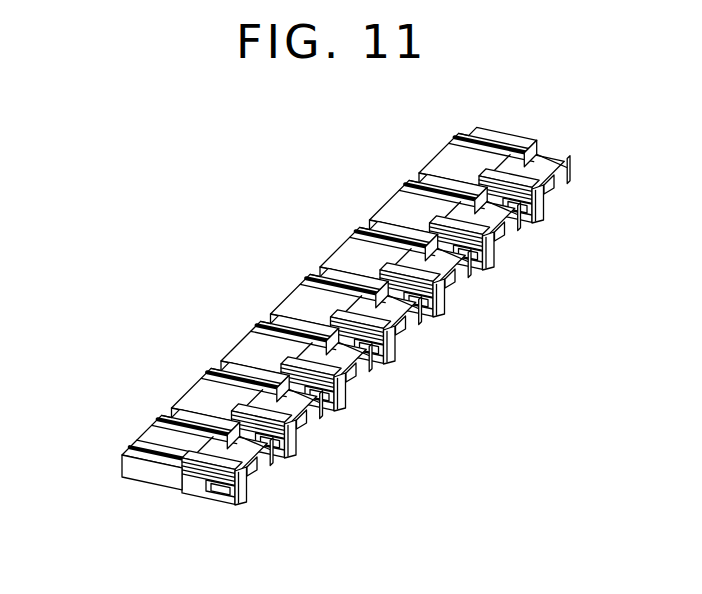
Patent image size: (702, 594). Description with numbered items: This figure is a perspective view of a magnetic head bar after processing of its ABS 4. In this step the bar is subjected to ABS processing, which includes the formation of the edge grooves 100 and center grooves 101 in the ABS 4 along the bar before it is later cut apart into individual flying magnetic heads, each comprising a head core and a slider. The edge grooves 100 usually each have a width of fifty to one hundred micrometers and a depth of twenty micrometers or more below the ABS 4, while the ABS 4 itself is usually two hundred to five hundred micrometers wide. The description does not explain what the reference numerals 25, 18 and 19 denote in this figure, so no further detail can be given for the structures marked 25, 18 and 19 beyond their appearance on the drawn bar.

The connector housing 25 is at (310, 346).
The ABS 4 is at (147, 401).
The center groove 101 is at (200, 413).
The edge groove 100 is at (256, 495).
The lock arm 18 is at (233, 500).
The engaging portion 19 is at (195, 491).